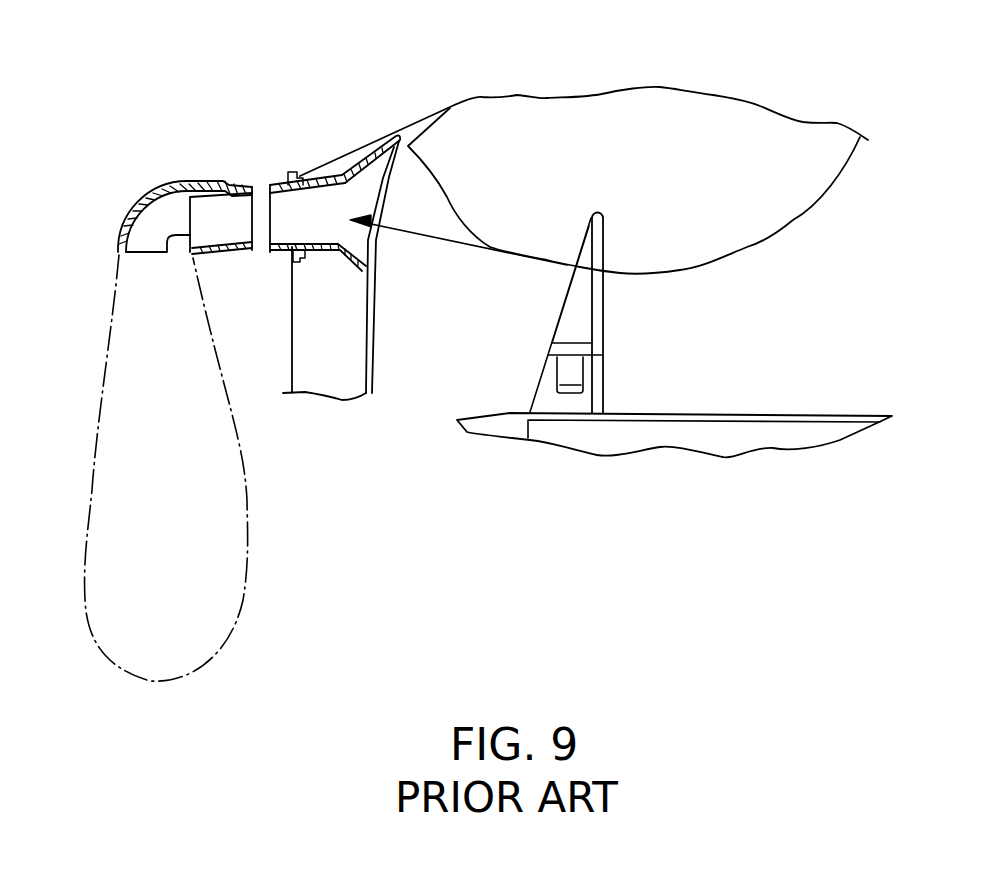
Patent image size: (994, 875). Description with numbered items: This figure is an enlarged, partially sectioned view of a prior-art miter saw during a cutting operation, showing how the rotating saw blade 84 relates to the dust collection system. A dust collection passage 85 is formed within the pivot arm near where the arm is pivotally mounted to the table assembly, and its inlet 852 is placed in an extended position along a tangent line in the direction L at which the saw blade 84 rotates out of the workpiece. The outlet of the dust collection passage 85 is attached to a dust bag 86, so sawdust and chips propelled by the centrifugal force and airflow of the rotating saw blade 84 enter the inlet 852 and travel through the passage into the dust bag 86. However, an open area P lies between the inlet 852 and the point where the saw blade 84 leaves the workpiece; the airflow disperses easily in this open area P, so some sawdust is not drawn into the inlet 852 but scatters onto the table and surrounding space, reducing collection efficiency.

The saw blade 84 is at (748, 198).
The dust collection passage 85 is at (297, 212).
The inlet 852 is at (365, 195).
The dust bag 86 is at (120, 422).
The direction of tangent line L is at (462, 243).
The open area P is at (452, 373).